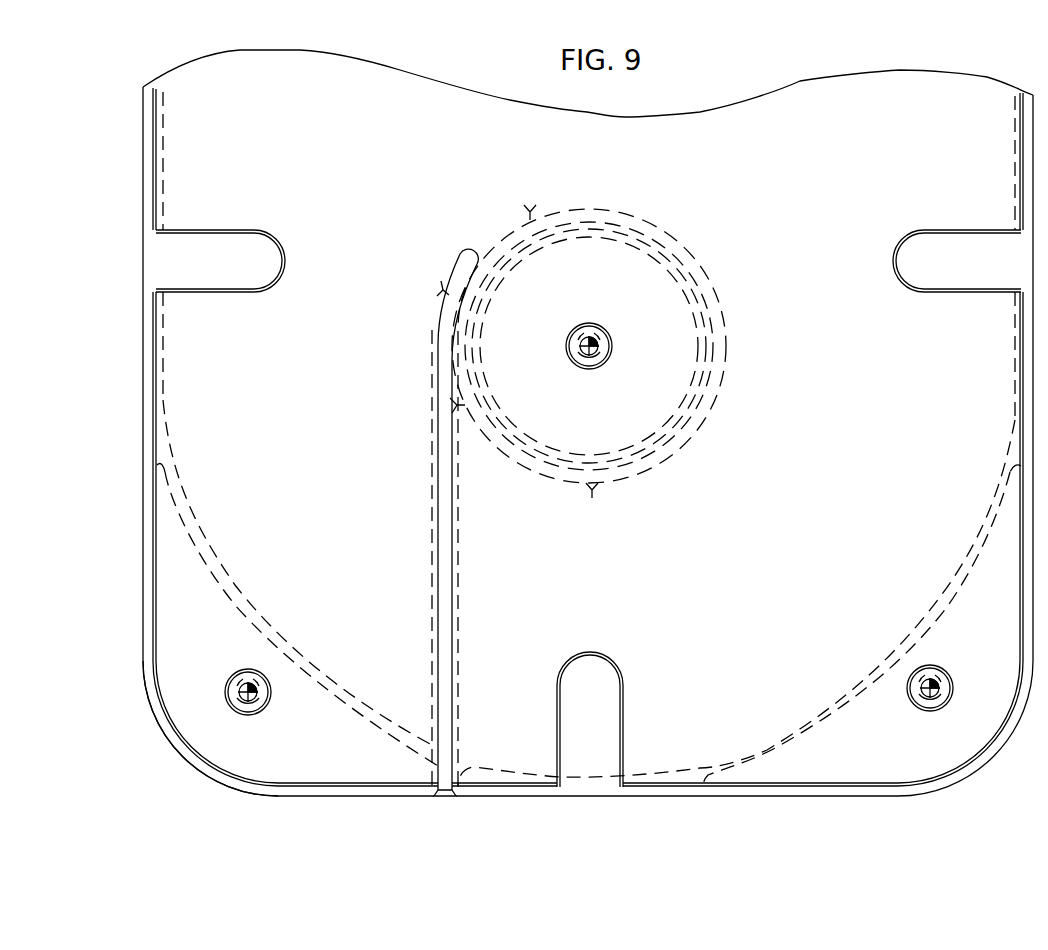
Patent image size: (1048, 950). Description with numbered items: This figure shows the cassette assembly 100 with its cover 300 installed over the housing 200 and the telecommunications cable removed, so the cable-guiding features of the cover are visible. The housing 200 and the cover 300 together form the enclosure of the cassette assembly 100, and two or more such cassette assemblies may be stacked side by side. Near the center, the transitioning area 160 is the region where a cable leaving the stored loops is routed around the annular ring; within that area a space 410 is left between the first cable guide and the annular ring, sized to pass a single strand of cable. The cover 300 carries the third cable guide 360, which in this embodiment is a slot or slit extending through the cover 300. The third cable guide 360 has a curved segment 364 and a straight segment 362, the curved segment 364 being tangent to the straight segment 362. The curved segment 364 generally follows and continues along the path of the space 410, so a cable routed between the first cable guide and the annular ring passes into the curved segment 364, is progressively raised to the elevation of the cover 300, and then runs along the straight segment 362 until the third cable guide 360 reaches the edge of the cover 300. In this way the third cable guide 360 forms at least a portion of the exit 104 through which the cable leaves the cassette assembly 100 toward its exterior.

The cassette assembly 100 is at (803, 75).
The cover 300 is at (418, 106).
The transitioning area 160 is at (398, 352).
The curved segment 364 is at (443, 290).
The exit 104 is at (443, 797).
The space 410 is at (530, 212).
The third cable guide 360 is at (432, 507).
The straight segment 362 is at (430, 697).
The housing 200 is at (178, 748).